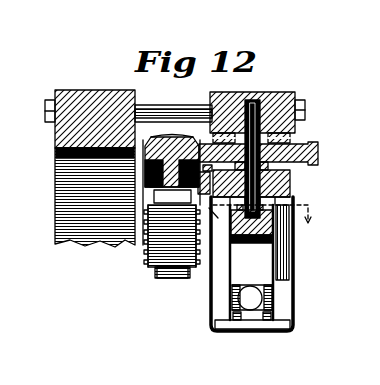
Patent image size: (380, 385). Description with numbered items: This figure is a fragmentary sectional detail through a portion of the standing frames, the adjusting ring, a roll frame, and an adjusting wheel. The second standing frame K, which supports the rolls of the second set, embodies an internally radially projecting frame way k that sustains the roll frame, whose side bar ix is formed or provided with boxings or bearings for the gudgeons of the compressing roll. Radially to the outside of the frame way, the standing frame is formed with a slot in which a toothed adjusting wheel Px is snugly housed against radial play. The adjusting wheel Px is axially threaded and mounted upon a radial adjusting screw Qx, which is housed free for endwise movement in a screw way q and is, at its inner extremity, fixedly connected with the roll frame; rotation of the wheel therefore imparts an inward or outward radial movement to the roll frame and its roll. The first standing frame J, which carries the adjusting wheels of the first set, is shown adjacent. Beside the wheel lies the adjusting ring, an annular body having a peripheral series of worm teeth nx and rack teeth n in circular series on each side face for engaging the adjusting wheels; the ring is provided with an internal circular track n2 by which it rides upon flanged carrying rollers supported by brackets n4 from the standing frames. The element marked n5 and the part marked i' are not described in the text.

The standing frame J is at (64, 91).
The adjusting screw Qx is at (245, 125).
The screw way q is at (288, 93).
The adjusting wheel Px is at (320, 153).
The standing frame K is at (288, 182).
The rack teeth n is at (143, 258).
The worm teeth nx is at (188, 138).
The part n^5 n5 is at (172, 196).
The internal circular track n2 is at (171, 279).
The bracket n4 is at (219, 219).
The frame way k is at (252, 264).
The piston i' is at (272, 224).
The side bar ix is at (252, 283).